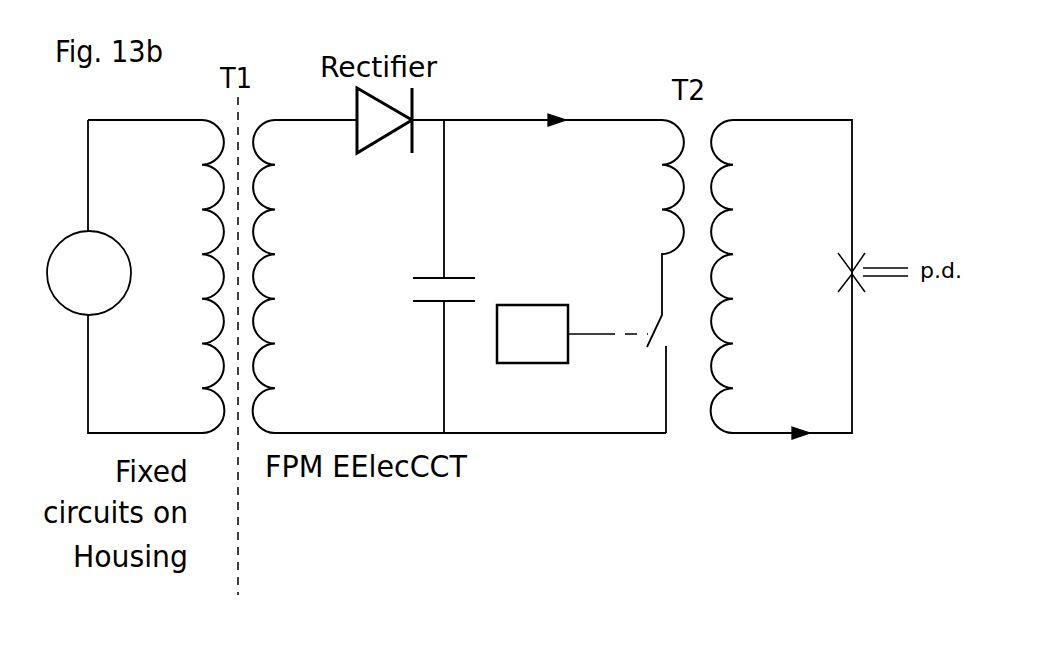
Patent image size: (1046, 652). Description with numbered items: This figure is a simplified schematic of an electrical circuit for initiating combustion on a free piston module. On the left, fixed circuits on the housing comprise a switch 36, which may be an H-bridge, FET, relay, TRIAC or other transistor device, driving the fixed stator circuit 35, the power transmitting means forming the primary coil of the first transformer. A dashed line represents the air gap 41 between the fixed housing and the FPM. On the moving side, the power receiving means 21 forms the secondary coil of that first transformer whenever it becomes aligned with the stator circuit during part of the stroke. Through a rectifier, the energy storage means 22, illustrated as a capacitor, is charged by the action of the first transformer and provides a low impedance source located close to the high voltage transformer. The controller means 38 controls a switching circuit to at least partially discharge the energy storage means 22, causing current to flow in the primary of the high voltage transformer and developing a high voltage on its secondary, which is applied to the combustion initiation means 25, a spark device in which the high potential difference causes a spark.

The power receiving means 21 is at (459, 260).
The energy storage means 22 is at (456, 276).
The combustion initiation means 25 is at (881, 238).
The fixed stator circuit 35 is at (176, 276).
The switch 36 is at (89, 273).
The controller means 38 is at (572, 334).
The air gap 41 is at (237, 368).